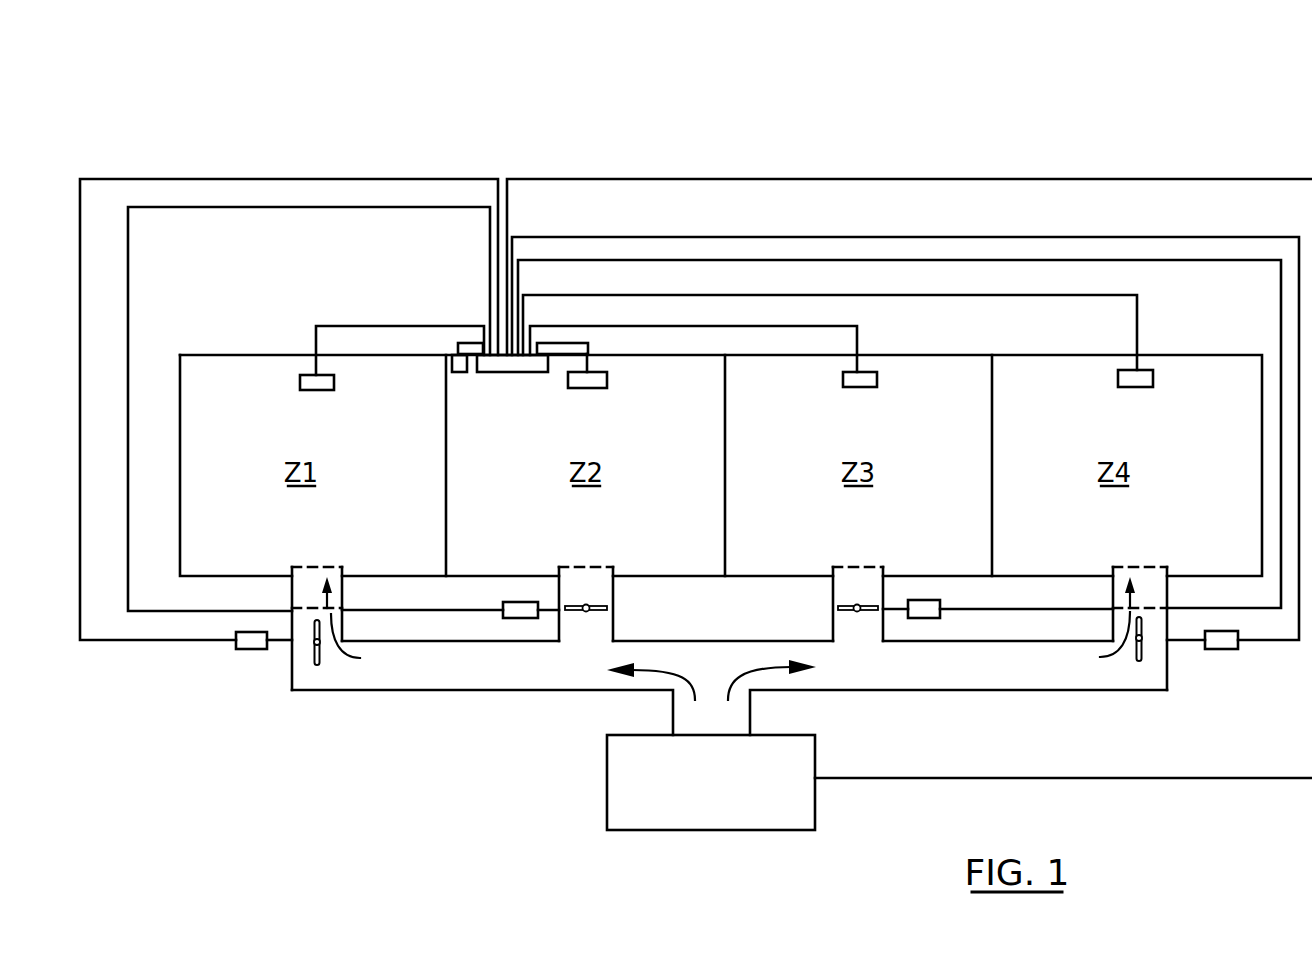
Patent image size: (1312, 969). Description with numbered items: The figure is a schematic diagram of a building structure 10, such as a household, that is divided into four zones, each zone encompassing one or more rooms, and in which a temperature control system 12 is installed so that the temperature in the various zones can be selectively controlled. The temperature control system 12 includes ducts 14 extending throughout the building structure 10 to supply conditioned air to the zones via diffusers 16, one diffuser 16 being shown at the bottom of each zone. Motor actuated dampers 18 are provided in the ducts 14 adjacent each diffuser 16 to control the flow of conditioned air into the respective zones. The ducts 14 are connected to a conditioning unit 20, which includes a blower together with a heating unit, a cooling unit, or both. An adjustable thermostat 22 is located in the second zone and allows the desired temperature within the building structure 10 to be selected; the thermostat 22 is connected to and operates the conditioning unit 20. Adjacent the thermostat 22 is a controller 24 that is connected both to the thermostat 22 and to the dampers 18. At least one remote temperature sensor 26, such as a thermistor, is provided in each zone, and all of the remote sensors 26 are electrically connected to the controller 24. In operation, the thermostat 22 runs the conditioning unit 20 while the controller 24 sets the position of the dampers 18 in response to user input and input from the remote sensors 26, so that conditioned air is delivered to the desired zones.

The building structure 10 is at (1084, 126).
The temperature control system 12 is at (341, 155).
The ducts 14 is at (390, 677).
The diffusers 16 is at (330, 565).
The motor actuated dampers 18 is at (253, 651).
The conditioning unit 20 is at (608, 788).
The adjustable thermostat 22 is at (461, 373).
The controller 24 is at (522, 373).
The remote temperature sensor 26 is at (334, 383).